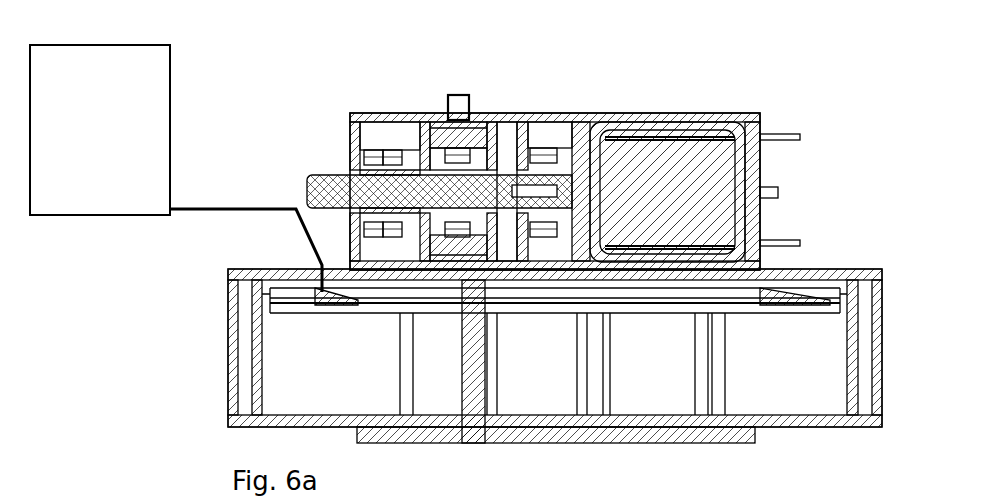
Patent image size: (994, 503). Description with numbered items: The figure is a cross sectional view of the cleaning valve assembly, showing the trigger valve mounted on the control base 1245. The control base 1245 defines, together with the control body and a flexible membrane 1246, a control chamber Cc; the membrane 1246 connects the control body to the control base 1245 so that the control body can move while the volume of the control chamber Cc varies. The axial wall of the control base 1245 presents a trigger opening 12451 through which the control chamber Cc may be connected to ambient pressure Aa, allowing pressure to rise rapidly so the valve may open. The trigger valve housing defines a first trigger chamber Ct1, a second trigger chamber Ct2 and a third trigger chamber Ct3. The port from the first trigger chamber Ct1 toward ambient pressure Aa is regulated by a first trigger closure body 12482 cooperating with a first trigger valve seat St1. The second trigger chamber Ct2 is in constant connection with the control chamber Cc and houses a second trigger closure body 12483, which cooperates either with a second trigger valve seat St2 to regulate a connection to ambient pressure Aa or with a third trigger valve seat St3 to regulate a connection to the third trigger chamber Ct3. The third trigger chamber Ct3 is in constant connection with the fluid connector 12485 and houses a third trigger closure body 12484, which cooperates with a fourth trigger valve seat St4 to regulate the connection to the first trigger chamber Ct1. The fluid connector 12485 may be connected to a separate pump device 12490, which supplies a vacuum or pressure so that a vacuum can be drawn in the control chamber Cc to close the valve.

The pump device 12490 is at (100, 130).
The second trigger closure body 12483 is at (347, 176).
The third trigger closure body 12484 is at (306, 182).
The control chamber Cc is at (305, 290).
The second trigger valve seat St2 is at (368, 143).
The second trigger chamber Ct2 is at (392, 120).
The third trigger valve seat St3 is at (408, 134).
The third trigger chamber Ct3 is at (446, 130).
The fluid connector 12485 is at (458, 95).
The fourth trigger valve seat St4 is at (476, 132).
The trigger opening 12451 is at (505, 270).
The first trigger chamber Ct1 is at (518, 160).
The first trigger valve seat St1 is at (545, 128).
The first trigger closure body 12482 is at (558, 175).
The ambient pressure Aa is at (567, 143).
The control base 1245 is at (838, 270).
The flexible membrane 1246 is at (790, 282).